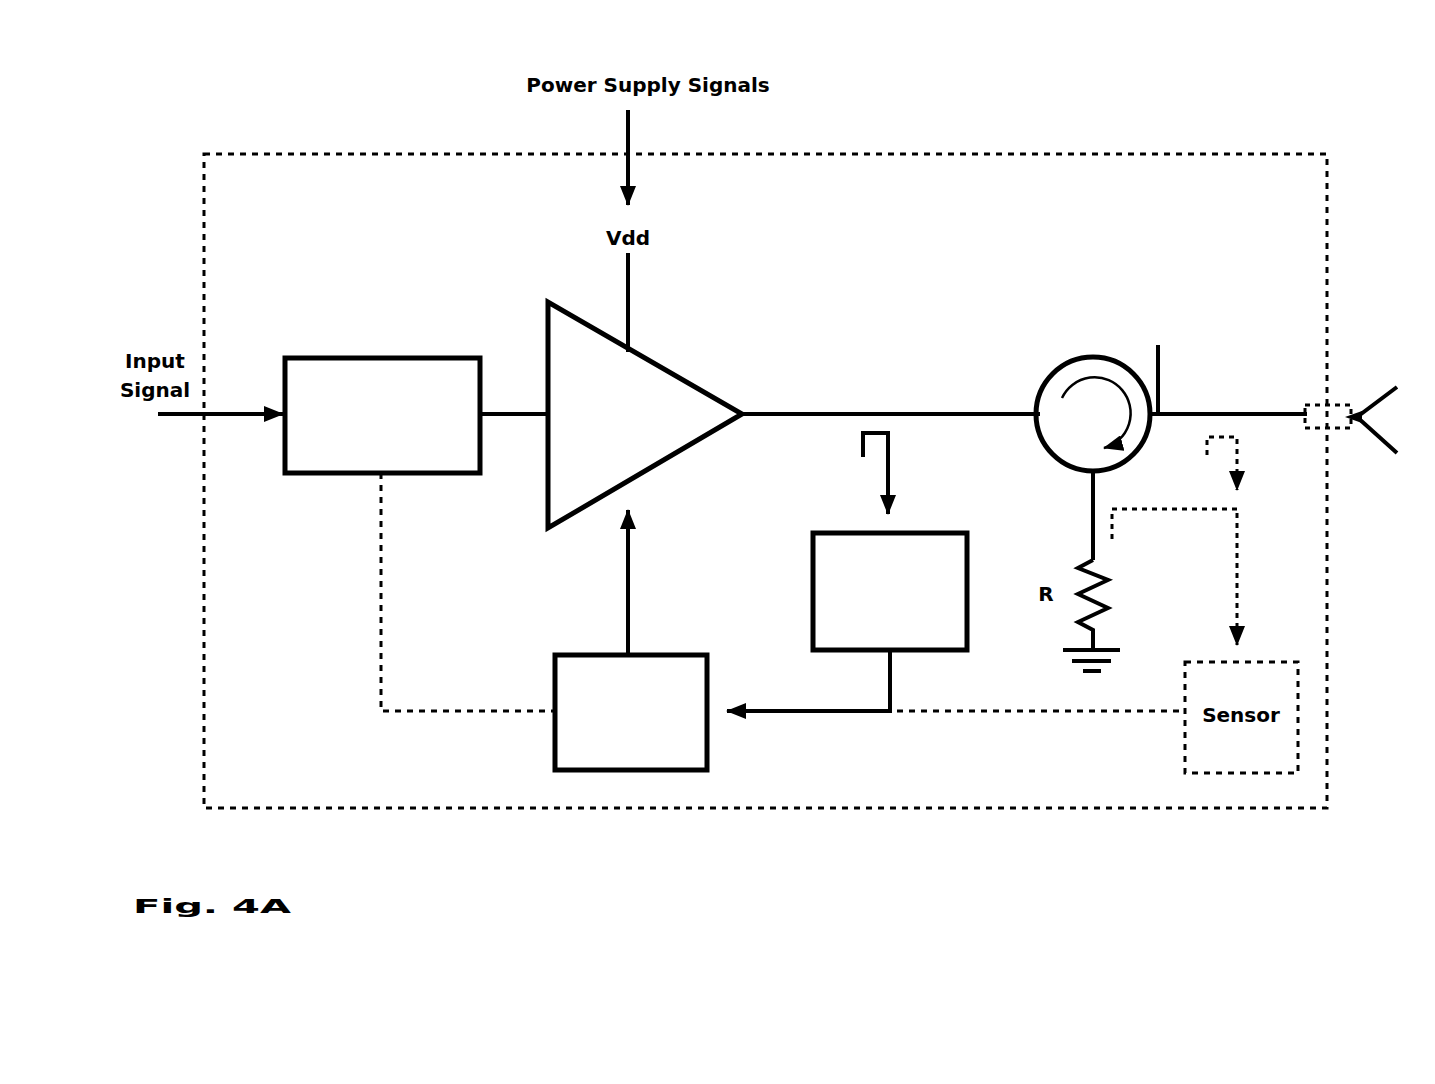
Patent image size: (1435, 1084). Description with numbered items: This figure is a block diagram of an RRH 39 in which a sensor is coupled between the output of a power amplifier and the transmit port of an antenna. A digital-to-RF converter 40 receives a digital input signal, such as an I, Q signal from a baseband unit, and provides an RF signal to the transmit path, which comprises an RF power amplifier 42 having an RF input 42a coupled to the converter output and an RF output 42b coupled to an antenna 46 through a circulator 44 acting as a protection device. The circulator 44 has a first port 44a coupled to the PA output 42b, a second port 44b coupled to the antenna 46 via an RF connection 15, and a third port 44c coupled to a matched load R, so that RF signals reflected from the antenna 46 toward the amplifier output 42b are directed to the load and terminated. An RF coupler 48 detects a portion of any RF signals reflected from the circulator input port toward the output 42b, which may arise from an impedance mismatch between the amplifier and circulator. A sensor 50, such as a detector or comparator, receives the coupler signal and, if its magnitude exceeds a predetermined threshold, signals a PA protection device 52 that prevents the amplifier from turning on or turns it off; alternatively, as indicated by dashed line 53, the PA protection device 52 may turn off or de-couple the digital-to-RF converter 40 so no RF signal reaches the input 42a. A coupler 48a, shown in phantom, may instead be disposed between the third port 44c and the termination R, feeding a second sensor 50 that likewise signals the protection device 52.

The RRH 39 is at (386, 152).
The digital-to-RF converter 40 is at (333, 358).
The RF power amplifier 42 is at (657, 363).
The RF input 42a is at (517, 412).
The RF output 42b is at (772, 413).
The circulator 44 is at (1097, 360).
The first circulator port 44a is at (1027, 415).
The second circulator port 44b is at (1228, 376).
The third circulator port 44c is at (1090, 477).
The antenna 46 is at (1380, 370).
The connection 15 is at (1311, 405).
The RF coupler 48 is at (838, 448).
The coupler 48a is at (1135, 560).
The sensor 50 is at (813, 587).
The PA protection device 52 is at (590, 653).
The dashed line 53 is at (377, 577).